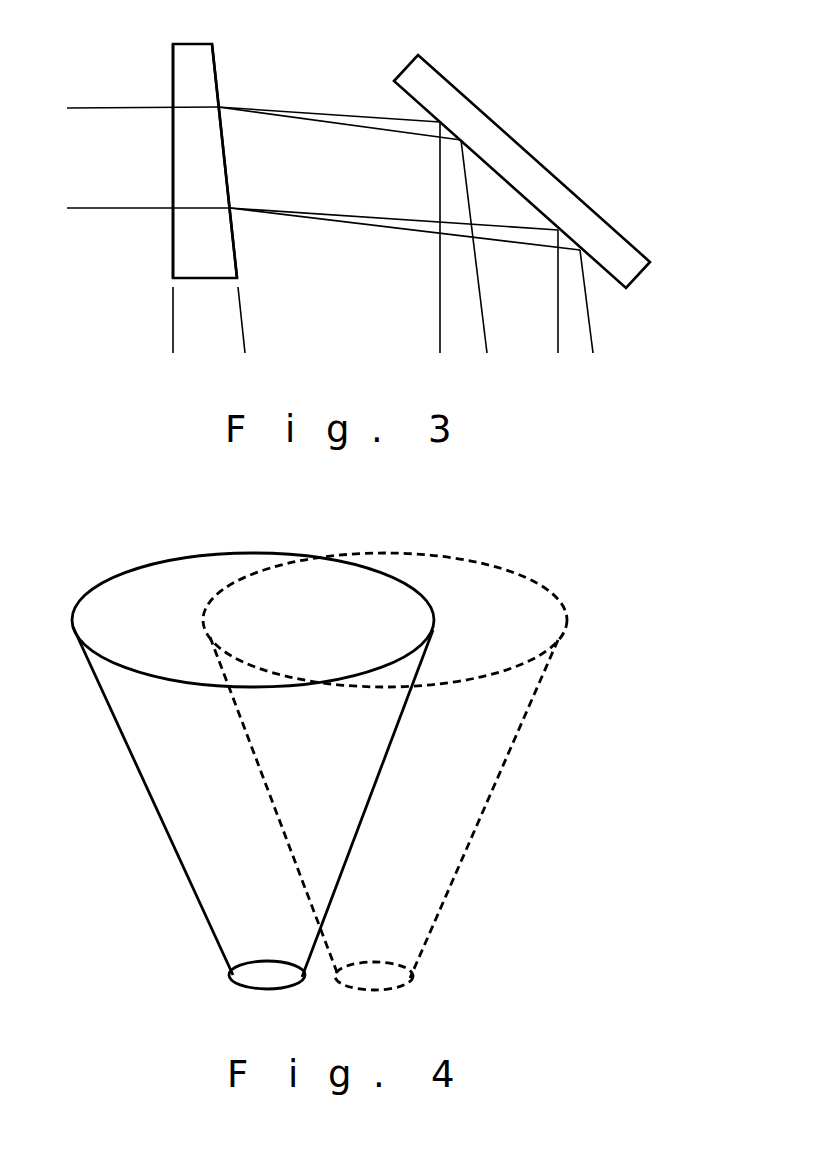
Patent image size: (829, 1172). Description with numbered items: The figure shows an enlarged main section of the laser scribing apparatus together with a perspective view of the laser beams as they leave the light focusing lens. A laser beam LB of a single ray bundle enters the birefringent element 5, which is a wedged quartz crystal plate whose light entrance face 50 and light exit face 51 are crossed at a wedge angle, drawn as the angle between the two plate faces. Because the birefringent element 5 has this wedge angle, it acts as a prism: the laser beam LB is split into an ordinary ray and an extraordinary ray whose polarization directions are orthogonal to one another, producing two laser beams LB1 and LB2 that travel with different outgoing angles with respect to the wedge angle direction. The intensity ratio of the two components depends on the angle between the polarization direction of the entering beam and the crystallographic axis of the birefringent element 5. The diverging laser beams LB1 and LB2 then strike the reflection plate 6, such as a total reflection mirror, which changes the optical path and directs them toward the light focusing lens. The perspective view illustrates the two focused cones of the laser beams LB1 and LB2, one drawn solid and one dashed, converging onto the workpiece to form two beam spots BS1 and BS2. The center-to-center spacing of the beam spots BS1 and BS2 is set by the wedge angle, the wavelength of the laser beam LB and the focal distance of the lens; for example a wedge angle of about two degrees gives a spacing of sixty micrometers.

In FIG. 3, the birefringent element 5 is at (237, 70).
In FIG. 3, the light exit face 51 is at (227, 183).
In FIG. 3, the light entrance face 50 is at (173, 260).
In FIG. 3, the reflection plate 6 is at (497, 135).
In FIG. 3, the laser beam LB is at (118, 108).
In FIG. 3, the laser beam LB1 is at (558, 267).
In FIG. 4, the laser beam LB1 is at (125, 745).
In FIG. 3, the laser beam LB2 is at (591, 335).
In FIG. 4, the laser beam LB2 is at (495, 787).
In FIG. 4, the beam spot BS1 is at (240, 987).
In FIG. 4, the beam spot BS2 is at (413, 987).